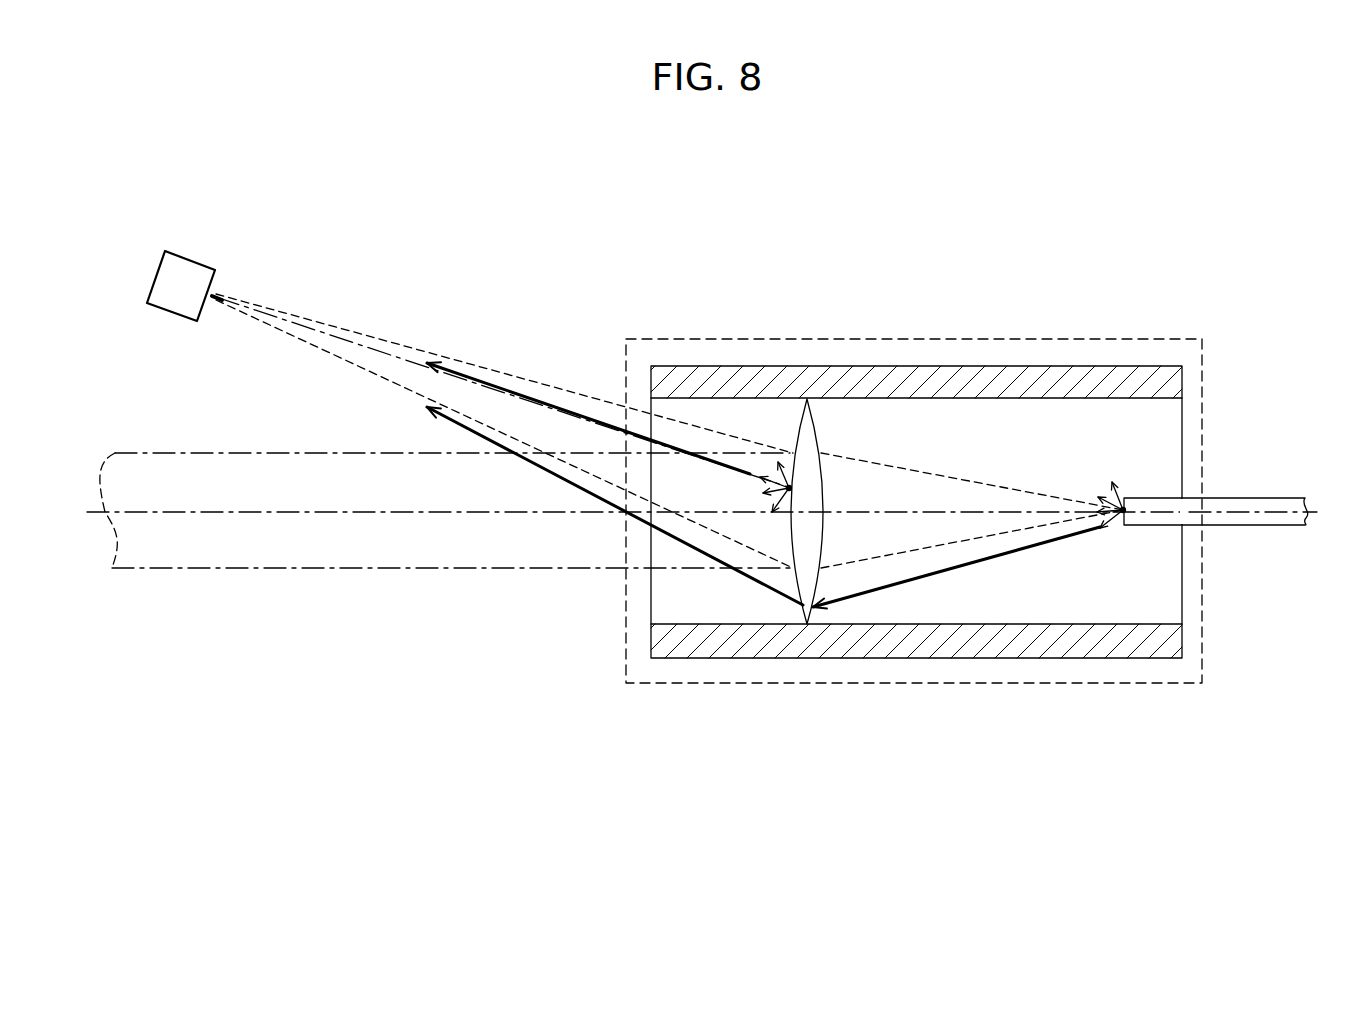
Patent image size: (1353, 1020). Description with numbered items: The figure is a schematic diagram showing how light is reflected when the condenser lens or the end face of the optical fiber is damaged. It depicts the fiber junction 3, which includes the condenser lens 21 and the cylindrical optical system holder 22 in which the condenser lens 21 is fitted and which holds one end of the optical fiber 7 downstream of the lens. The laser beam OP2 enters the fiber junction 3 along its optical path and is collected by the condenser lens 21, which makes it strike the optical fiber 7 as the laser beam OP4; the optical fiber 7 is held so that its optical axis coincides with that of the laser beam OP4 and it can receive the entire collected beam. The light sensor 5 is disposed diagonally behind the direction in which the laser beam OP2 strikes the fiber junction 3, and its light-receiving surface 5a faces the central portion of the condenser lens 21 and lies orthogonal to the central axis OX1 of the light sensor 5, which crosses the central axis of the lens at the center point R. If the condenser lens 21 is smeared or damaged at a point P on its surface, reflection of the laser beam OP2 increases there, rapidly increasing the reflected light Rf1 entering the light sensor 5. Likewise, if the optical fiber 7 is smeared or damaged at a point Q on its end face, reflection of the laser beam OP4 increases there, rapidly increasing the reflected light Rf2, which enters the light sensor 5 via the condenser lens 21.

The light sensor 5 is at (180, 262).
The light-receiving surface 5a is at (215, 277).
The fiber junction 3 is at (784, 340).
The optical system holder 22 is at (901, 366).
The condenser lens 21 is at (812, 582).
The optical fiber 7 is at (1258, 503).
The point on lens surface P is at (789, 488).
The point on fiber end face Q is at (1123, 510).
The center point of condenser lens R is at (805, 510).
The laser beam OP2 is at (445, 493).
The laser beam OP4 is at (972, 510).
The central axis of light sensor OX1 is at (527, 410).
The reflected light Rf1 is at (588, 400).
The reflected light Rf2 is at (740, 501).